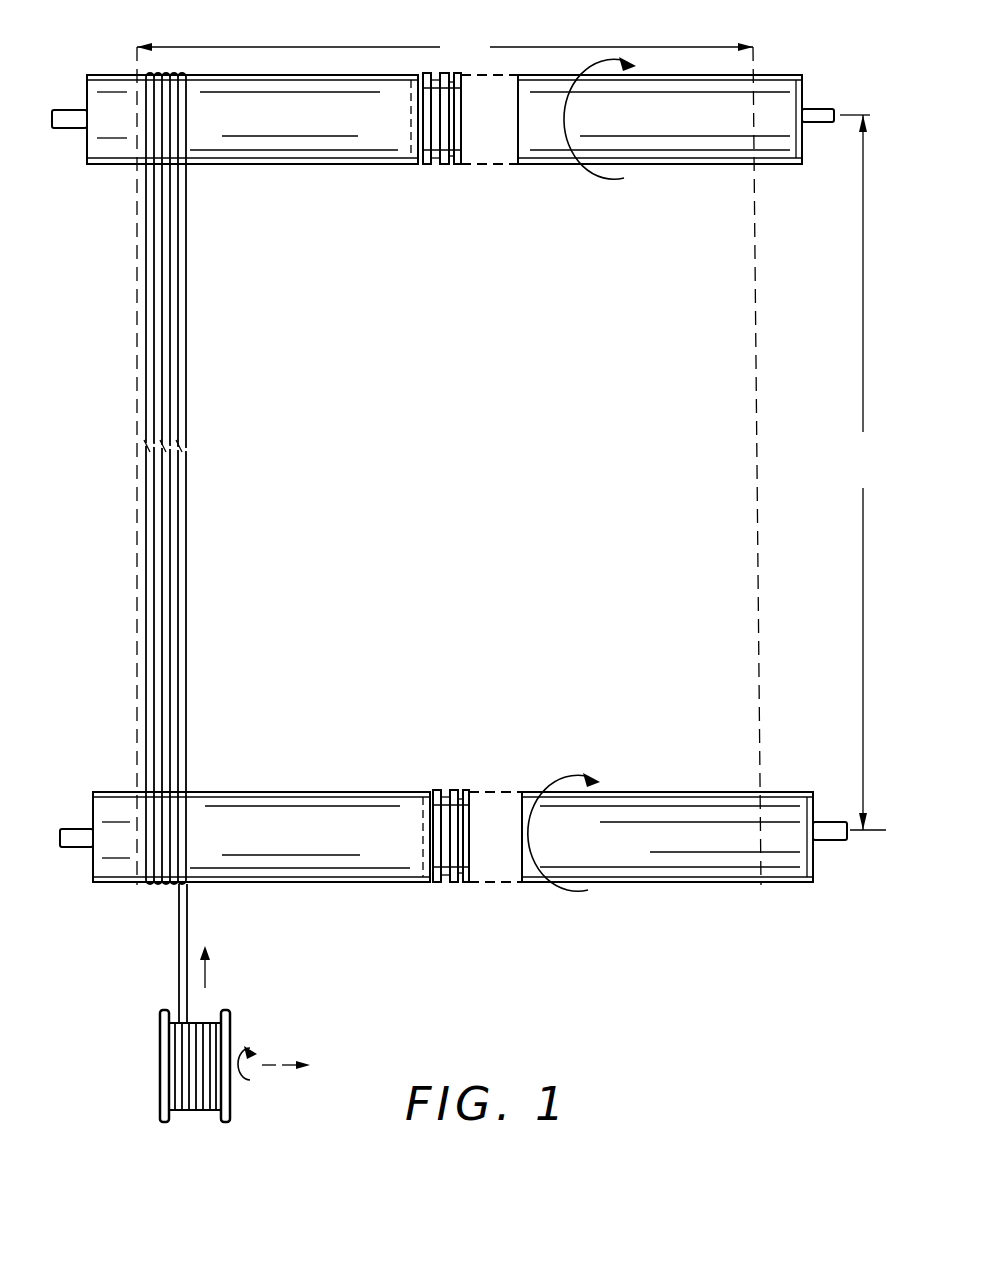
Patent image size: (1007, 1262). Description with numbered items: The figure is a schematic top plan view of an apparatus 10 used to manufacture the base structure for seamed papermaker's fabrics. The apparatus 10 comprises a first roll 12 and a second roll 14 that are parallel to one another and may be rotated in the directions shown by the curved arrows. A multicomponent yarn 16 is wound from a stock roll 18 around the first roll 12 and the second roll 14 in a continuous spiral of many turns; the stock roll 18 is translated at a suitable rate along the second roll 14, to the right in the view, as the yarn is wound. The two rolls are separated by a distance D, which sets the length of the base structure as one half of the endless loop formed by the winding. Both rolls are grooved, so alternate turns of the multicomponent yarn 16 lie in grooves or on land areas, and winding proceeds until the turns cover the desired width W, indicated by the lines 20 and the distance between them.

The apparatus 10 is at (812, 46).
The first roll 12 is at (788, 100).
The second roll 14 is at (793, 850).
The multicomponent yarn 16 is at (187, 357).
The stock roll 18 is at (160, 1070).
The lines 20 is at (146, 884).